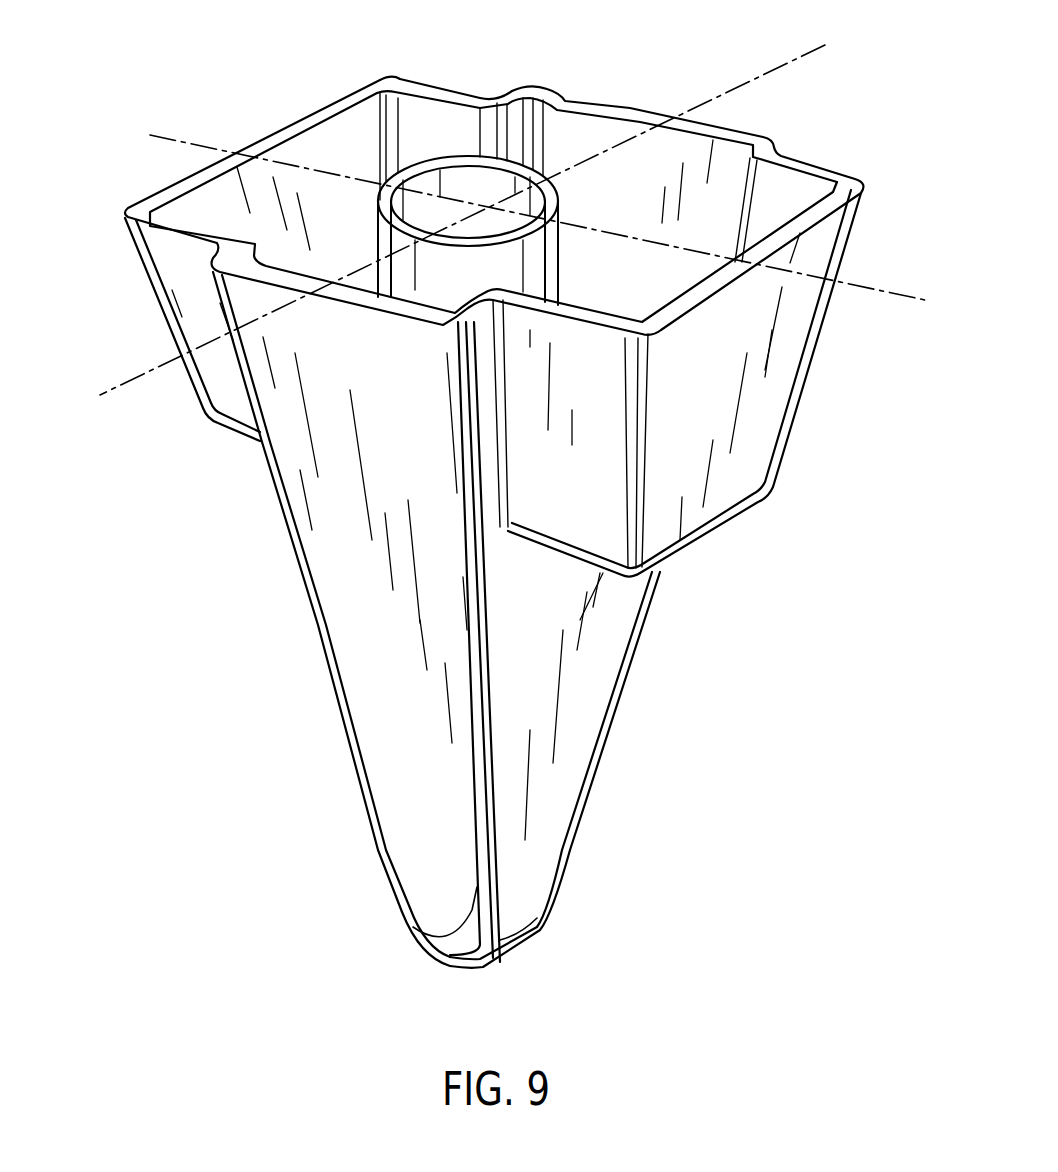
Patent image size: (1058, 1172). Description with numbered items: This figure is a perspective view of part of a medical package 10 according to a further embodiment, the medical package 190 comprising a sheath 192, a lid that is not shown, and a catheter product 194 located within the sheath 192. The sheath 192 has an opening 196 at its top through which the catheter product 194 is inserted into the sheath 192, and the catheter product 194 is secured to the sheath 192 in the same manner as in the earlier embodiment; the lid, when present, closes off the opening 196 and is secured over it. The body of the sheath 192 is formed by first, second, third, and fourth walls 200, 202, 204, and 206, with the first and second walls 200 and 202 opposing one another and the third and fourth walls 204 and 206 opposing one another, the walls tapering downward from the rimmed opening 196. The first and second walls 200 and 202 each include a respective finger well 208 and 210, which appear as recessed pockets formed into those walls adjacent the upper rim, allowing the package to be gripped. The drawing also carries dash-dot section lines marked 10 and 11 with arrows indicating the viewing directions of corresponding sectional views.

The medical package 190 is at (192, 72).
The sheath 192 is at (333, 568).
The catheter product 194 is at (500, 263).
The opening 196 is at (607, 130).
The first wall 200 is at (598, 672).
The second wall 202 is at (252, 528).
The third wall 204 is at (382, 722).
The fourth wall 206 is at (682, 595).
The finger well 208 is at (775, 396).
The finger well 210 is at (182, 292).
The medical package 10 is at (840, 46).
The section line 11 is at (150, 136).